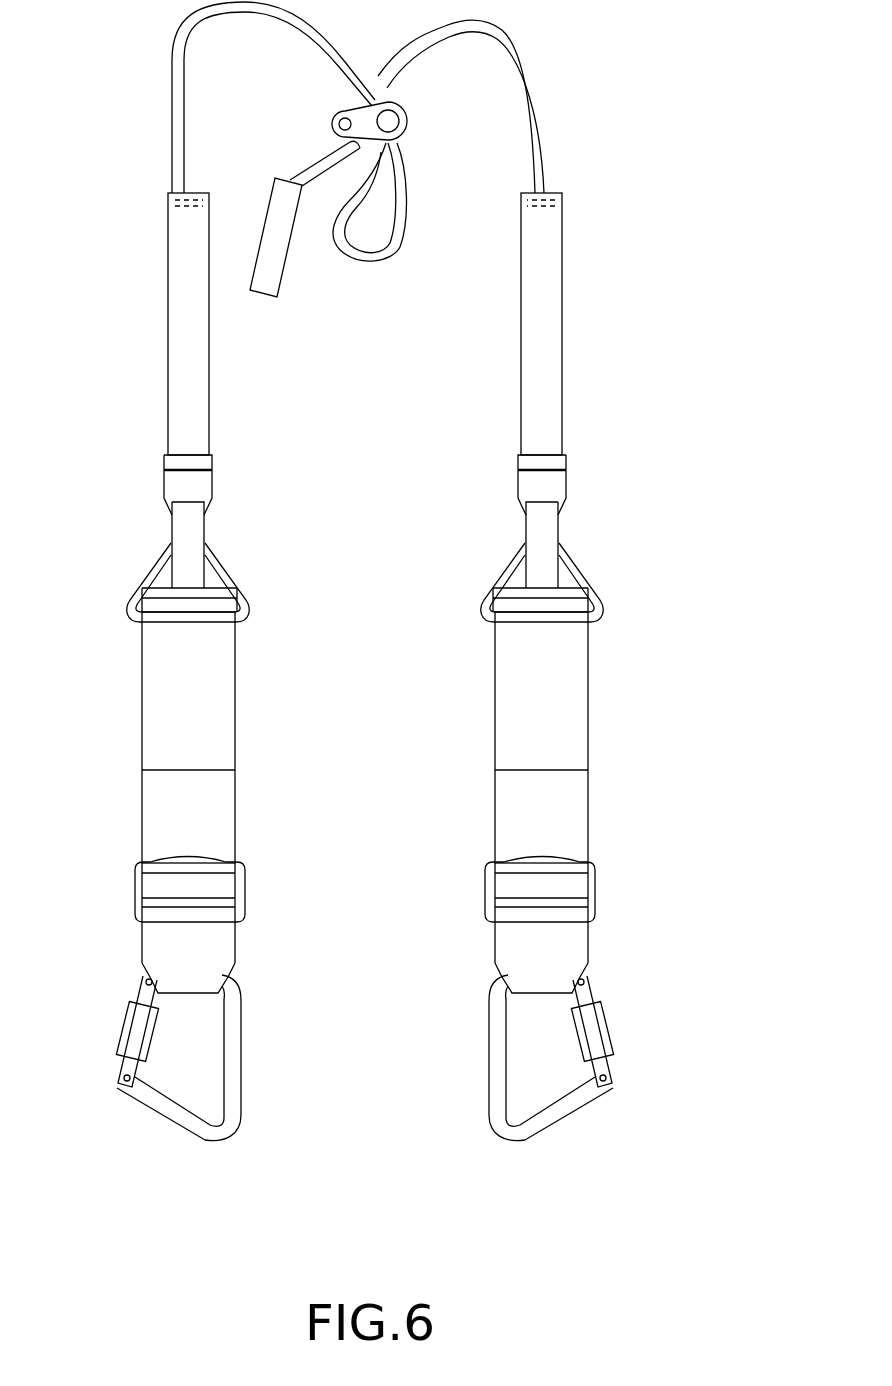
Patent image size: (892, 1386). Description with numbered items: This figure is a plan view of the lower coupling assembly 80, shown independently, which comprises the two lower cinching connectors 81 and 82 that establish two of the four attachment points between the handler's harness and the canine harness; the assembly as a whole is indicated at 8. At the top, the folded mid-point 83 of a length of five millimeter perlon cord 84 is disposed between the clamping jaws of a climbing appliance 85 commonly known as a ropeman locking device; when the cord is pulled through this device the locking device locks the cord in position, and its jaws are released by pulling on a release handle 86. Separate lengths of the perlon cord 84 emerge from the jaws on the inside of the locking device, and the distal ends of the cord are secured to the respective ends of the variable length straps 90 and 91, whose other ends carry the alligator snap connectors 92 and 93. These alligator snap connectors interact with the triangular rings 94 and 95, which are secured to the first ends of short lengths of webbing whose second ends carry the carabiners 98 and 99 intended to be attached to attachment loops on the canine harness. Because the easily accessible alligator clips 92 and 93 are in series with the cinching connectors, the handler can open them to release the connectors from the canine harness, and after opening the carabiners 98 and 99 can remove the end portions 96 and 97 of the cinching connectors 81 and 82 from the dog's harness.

The lanyard assembly 8 is at (635, 392).
The lower coupling assembly 80 is at (657, 793).
The lower cinching connector 81 is at (598, 645).
The lower cinching connector 82 is at (250, 680).
The folded mid-point 83 is at (385, 258).
The perlon cord 84 is at (532, 97).
The climbing appliance 85 is at (403, 113).
The release handle 86 is at (287, 275).
The variable length strap 90 is at (547, 285).
The variable length strap 91 is at (197, 412).
The alligator snap connector 92 is at (547, 533).
The alligator snap connector 93 is at (195, 535).
The triangular ring 94 is at (580, 570).
The triangular ring 95 is at (228, 572).
The end portion 96 is at (575, 702).
The end portion 97 is at (220, 743).
The carabiner 98 is at (598, 1043).
The carabiner 99 is at (228, 1050).